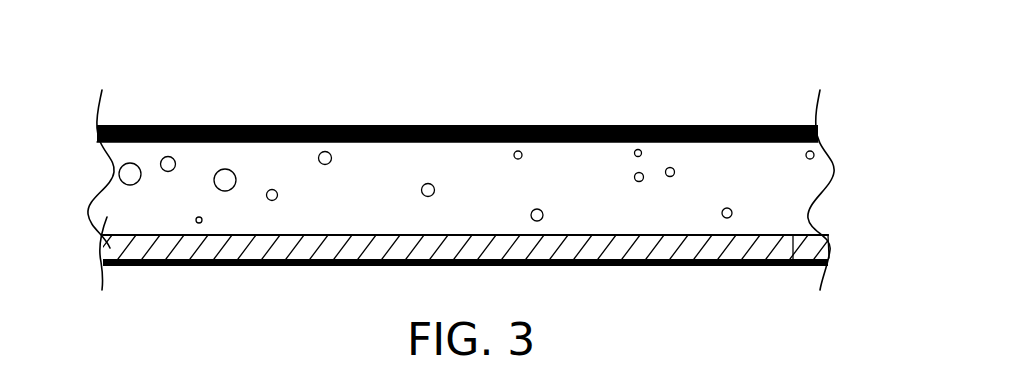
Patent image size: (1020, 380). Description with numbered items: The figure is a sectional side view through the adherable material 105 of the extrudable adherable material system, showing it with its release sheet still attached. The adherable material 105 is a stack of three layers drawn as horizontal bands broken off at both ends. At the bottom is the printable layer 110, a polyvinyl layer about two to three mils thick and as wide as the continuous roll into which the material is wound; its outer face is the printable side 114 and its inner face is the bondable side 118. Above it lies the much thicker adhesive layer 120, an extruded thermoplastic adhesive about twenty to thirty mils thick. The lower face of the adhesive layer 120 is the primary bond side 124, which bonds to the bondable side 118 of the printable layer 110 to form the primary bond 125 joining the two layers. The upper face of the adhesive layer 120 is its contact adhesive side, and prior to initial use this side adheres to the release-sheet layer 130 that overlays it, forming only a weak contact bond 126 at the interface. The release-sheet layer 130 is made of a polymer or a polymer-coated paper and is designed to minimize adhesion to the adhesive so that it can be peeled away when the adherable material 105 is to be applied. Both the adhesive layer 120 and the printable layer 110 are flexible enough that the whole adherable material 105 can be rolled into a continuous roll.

The adherable material 105 is at (270, 112).
The release-sheet layer 130 is at (480, 125).
The contact bond 126 is at (822, 143).
The bondable side 118 is at (808, 217).
The printable layer 110 is at (447, 254).
The adhesive layer 120 is at (102, 234).
The printable side 114 is at (593, 266).
The primary bond side 124 is at (793, 266).
The primary bond 125 is at (829, 240).